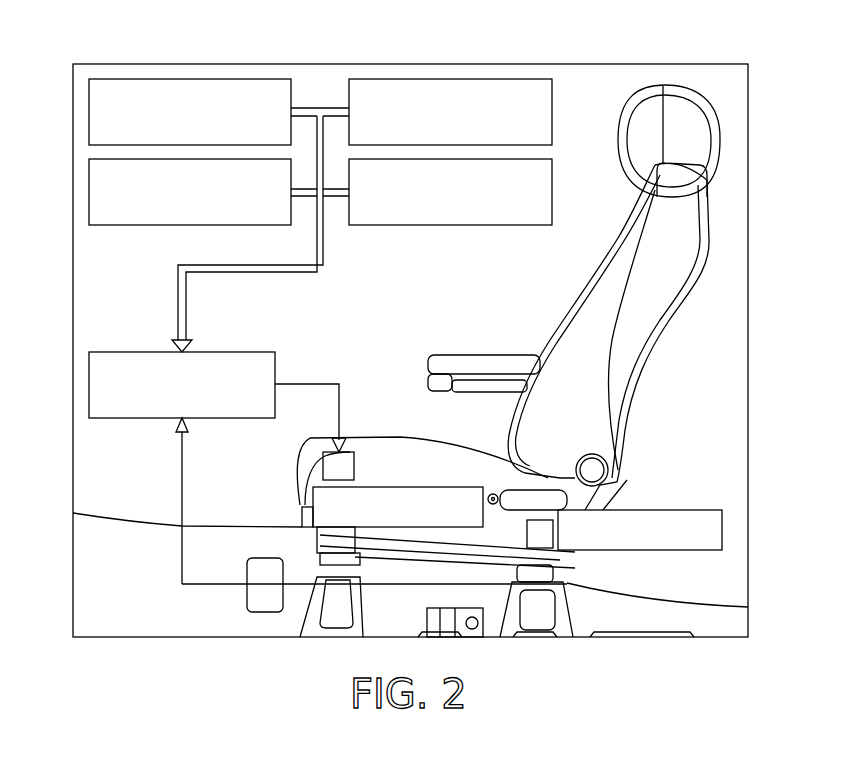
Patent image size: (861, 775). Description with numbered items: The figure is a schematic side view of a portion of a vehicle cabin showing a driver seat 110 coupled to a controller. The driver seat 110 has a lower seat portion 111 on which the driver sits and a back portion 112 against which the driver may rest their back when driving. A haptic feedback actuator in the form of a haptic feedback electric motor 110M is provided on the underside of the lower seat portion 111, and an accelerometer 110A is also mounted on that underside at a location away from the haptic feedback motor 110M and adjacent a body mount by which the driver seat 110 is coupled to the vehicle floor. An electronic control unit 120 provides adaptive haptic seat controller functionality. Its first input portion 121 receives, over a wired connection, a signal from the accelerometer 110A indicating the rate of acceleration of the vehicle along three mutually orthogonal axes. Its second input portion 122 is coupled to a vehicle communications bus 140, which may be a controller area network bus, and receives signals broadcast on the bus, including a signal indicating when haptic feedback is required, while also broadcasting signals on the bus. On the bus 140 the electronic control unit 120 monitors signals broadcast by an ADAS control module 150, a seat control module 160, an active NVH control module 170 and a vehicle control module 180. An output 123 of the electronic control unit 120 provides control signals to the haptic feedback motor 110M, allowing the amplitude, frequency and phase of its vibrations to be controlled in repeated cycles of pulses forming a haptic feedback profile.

The driver seat 110 is at (695, 218).
The accelerometer 110A is at (570, 553).
The haptic feedback electric motor 110M is at (348, 452).
The lower seat portion 111 is at (425, 456).
The back portion 112 is at (647, 288).
The electronic control unit 120 is at (230, 352).
The first input portion 121 is at (178, 428).
The second input portion 122 is at (180, 348).
The output 123 is at (276, 384).
The vehicle communications bus 140 is at (316, 108).
The ADAS control module 150 is at (186, 79).
The seat control module 160 is at (450, 79).
The active NVH control module 170 is at (448, 226).
The vehicle control module 180 is at (122, 226).